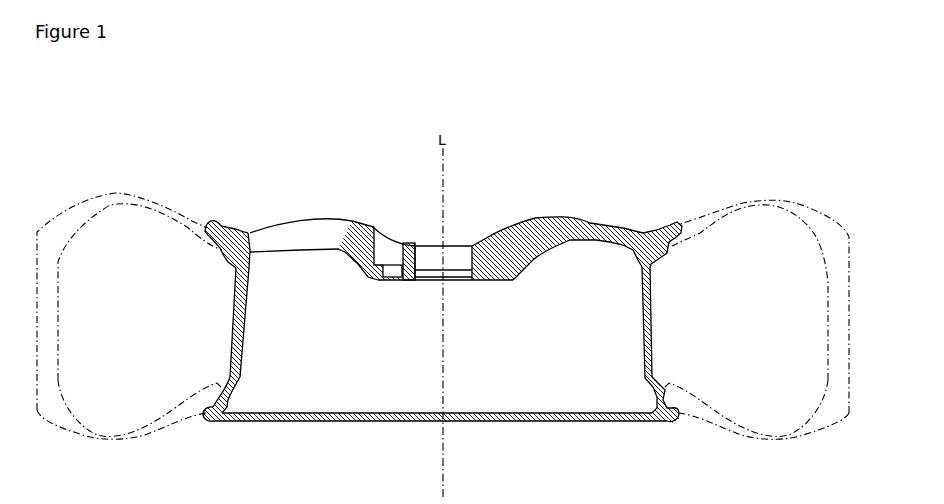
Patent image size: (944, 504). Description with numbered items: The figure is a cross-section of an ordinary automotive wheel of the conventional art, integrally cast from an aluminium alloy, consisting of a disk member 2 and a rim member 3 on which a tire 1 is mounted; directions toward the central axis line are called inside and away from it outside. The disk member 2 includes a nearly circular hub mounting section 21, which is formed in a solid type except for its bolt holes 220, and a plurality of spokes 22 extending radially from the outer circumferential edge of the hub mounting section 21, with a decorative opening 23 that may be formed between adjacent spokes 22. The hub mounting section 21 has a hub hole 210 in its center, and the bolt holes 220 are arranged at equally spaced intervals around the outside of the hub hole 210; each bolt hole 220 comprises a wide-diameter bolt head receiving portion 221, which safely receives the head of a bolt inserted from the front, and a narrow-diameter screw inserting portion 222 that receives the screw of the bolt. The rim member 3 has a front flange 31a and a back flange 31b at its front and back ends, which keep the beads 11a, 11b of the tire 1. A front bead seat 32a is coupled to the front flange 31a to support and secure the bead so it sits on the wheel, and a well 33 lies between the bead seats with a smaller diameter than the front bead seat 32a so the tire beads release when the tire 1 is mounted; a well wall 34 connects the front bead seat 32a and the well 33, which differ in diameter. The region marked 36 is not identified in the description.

The tire 1 is at (745, 199).
The disk member 2 is at (342, 209).
The rim member 3 is at (230, 334).
The hub mounting section 21 is at (407, 283).
The spokes 22 is at (558, 221).
The decorative opening 23 is at (301, 232).
The hub hole 210 is at (458, 281).
The bolt holes 220 is at (411, 193).
The bolt head receiving portion 221 is at (403, 247).
The screw inserting portion 222 is at (388, 265).
The front flange 31a is at (218, 221).
The back flange 31b is at (208, 419).
The front bead 11a is at (223, 232).
The back bead 11b is at (241, 419).
The front bead seat 32a is at (220, 247).
The well 33 is at (237, 296).
The well wall 34 is at (230, 265).
The rim-disc junction 36 is at (627, 263).